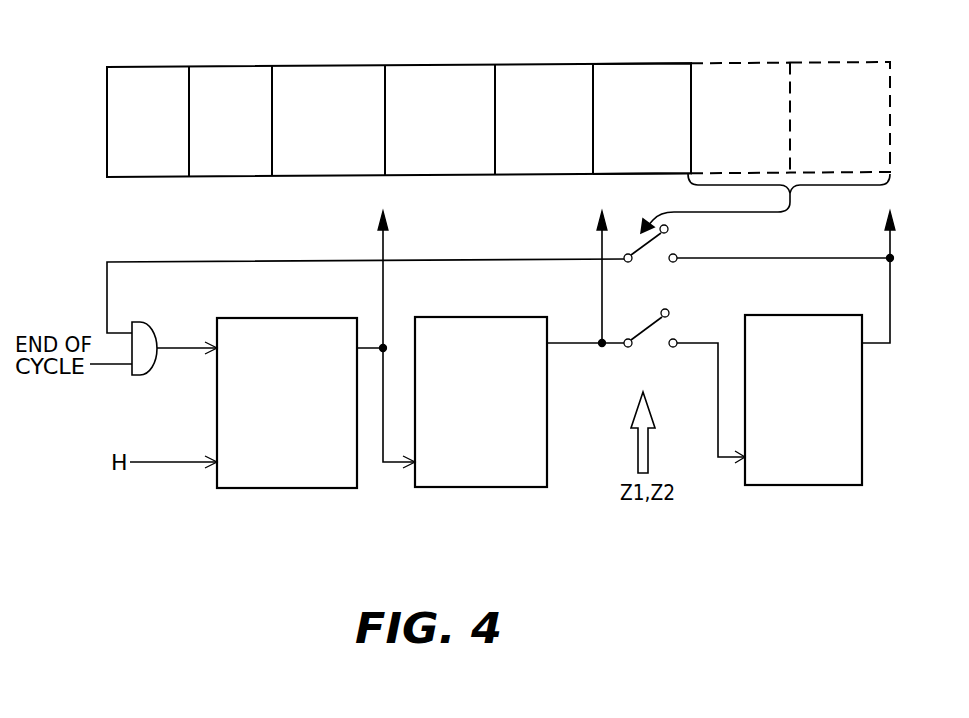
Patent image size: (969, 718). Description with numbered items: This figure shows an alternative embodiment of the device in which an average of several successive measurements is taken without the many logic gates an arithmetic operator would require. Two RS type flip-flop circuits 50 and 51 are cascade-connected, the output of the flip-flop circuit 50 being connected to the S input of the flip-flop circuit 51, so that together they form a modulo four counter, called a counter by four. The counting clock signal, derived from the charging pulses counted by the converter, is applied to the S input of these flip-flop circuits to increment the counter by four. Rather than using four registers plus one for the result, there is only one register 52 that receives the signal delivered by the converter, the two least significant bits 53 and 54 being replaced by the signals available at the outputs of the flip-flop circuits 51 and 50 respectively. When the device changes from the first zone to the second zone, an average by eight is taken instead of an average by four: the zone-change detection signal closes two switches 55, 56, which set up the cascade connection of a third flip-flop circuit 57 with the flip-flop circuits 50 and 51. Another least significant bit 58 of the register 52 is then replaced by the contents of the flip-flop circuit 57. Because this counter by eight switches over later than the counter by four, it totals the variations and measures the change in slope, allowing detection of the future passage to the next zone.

The RS type flip-flop circuit 50 is at (282, 490).
The RS type flip-flop circuit 51 is at (483, 490).
The register 52 is at (143, 72).
The least significant bit 53 is at (735, 70).
The least significant bit 54 is at (840, 68).
The switch 55 is at (654, 245).
The switch 56 is at (654, 330).
The third flip-flop circuit 57 is at (808, 487).
The least significant bit 58 is at (645, 70).